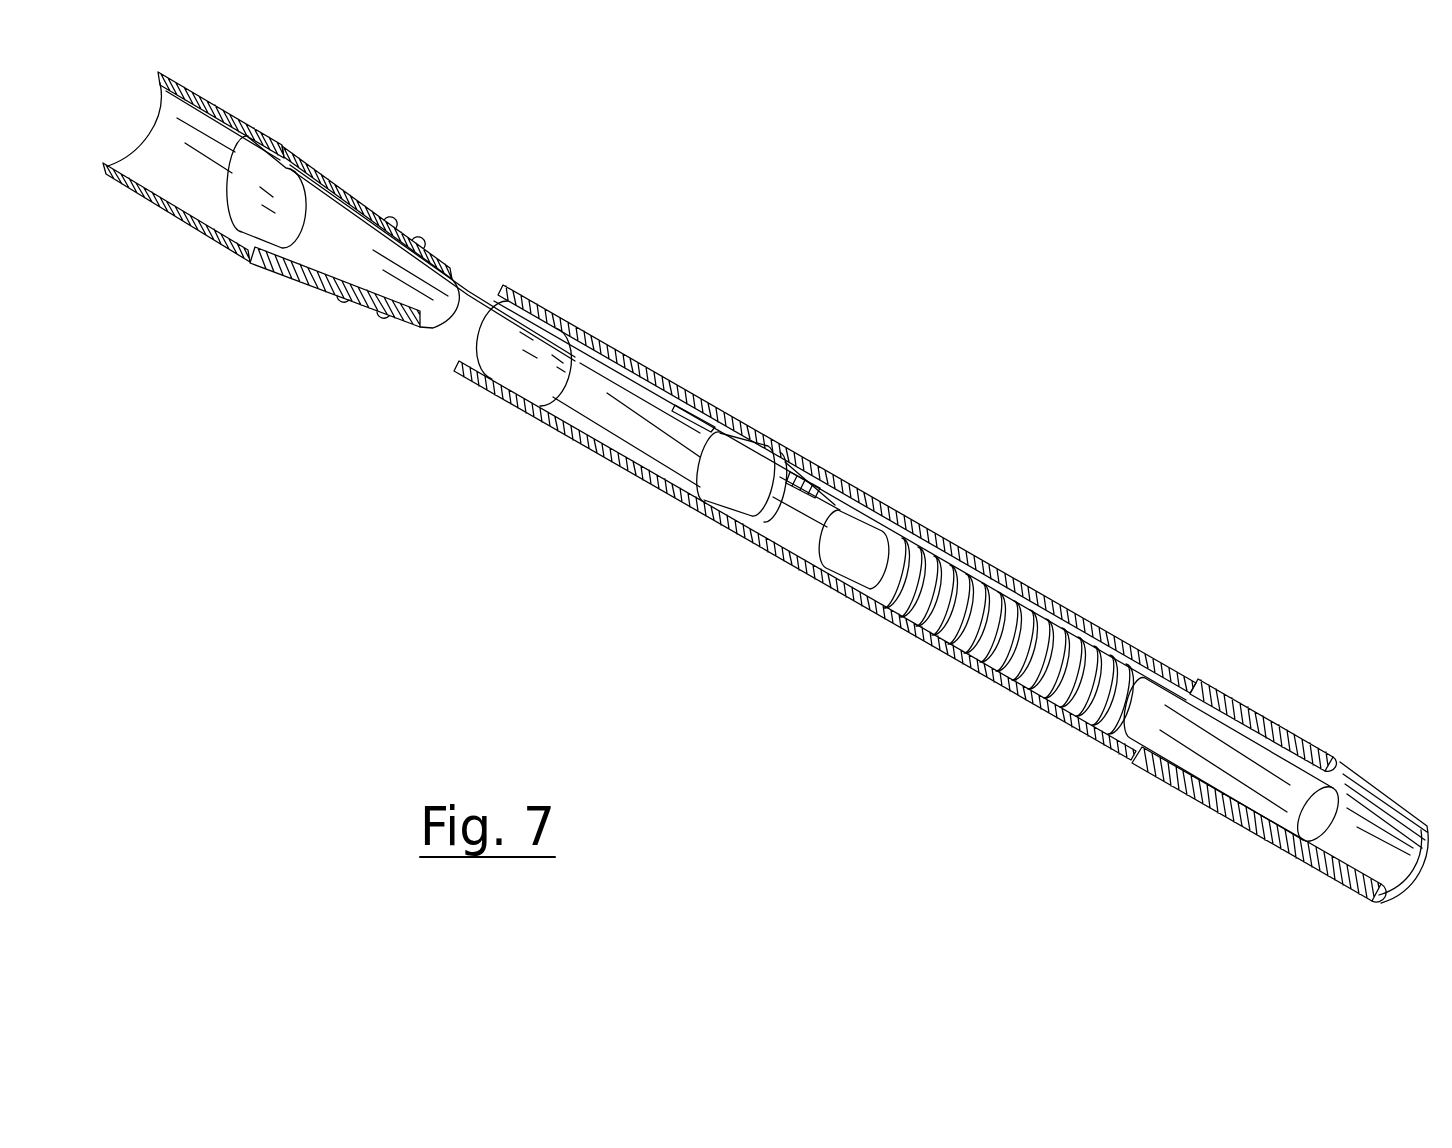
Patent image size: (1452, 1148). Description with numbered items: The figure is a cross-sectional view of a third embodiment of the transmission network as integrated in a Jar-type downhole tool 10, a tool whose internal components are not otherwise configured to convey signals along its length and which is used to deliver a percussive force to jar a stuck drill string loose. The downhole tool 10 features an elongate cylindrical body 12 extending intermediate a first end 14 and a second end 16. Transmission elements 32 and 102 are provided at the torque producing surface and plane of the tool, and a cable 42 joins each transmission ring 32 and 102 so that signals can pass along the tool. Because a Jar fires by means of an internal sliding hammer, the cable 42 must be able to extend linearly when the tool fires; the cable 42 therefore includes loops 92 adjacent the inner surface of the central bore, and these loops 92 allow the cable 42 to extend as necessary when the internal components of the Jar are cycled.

The downhole tool 10 is at (440, 413).
The elongate cylindrical body 12 is at (693, 390).
The first end 14 is at (291, 152).
The second end 16 is at (1253, 707).
The transmission element 32 is at (1390, 903).
The cable 42 is at (487, 297).
The loops 92 is at (938, 640).
The transmission element 102 is at (203, 207).